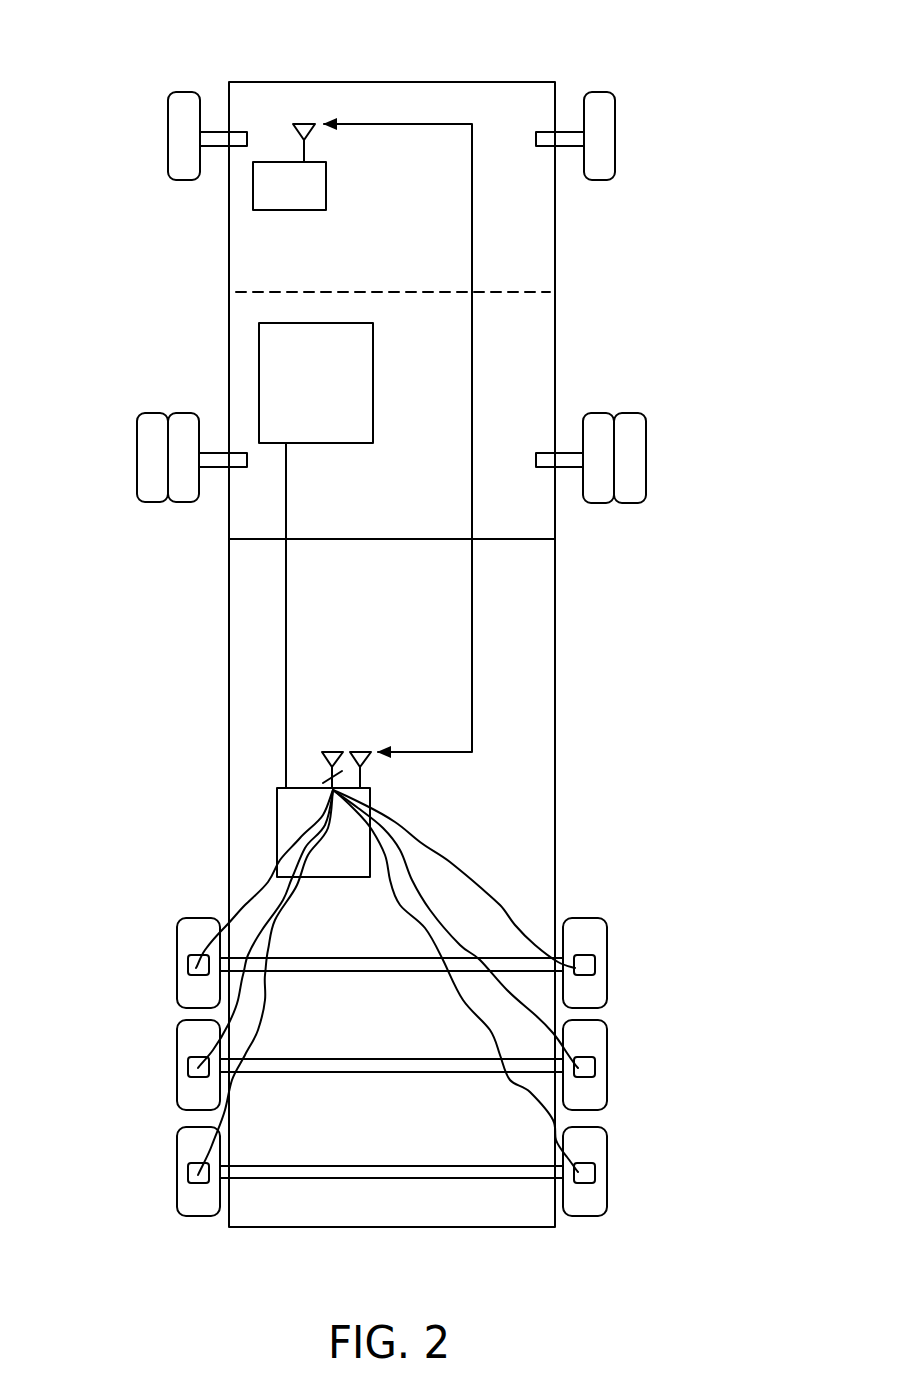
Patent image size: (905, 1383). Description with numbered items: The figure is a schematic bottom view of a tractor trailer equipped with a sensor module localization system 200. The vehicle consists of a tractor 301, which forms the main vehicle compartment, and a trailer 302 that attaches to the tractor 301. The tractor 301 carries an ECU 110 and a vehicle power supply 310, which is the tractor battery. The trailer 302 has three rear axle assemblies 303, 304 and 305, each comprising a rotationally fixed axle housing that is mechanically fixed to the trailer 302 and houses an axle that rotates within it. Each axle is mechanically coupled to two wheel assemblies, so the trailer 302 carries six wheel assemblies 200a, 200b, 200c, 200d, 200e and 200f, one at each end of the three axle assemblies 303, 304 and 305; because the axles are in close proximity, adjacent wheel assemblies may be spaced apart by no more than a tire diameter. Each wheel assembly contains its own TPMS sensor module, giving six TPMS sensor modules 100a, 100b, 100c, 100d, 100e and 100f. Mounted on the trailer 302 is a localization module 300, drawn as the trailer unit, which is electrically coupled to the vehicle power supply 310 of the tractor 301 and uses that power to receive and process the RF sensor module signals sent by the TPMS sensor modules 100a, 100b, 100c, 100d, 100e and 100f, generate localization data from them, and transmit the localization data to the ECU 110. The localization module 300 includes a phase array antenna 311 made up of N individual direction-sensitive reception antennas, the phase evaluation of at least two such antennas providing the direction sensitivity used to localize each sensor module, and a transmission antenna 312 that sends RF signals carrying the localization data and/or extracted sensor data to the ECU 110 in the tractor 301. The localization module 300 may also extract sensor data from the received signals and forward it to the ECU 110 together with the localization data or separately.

The sensor module localization system 200 is at (145, 40).
The ECU 110 is at (253, 200).
The tractor 301 is at (555, 221).
The trailer 302 is at (555, 705).
The vehicle power supply 310 is at (339, 443).
The phase array antenna 311 is at (328, 750).
The transmission antenna 312 is at (362, 750).
The localization module 300 is at (277, 812).
The first rear axle assembly 303 is at (390, 972).
The second rear axle assembly 304 is at (390, 1073).
The third rear axle assembly 305 is at (392, 1178).
The TPMS sensor module 100a is at (595, 963).
The TPMS sensor module 100b is at (188, 963).
The TPMS sensor module 100c is at (595, 1063).
The TPMS sensor module 100d is at (188, 1063).
The TPMS sensor module 100e is at (595, 1170).
The TPMS sensor module 100f is at (188, 1170).
The wheel assembly 200a is at (607, 993).
The wheel assembly 200b is at (177, 993).
The wheel assembly 200c is at (607, 1095).
The wheel assembly 200d is at (177, 1095).
The wheel assembly 200e is at (607, 1200).
The wheel assembly 200f is at (177, 1200).